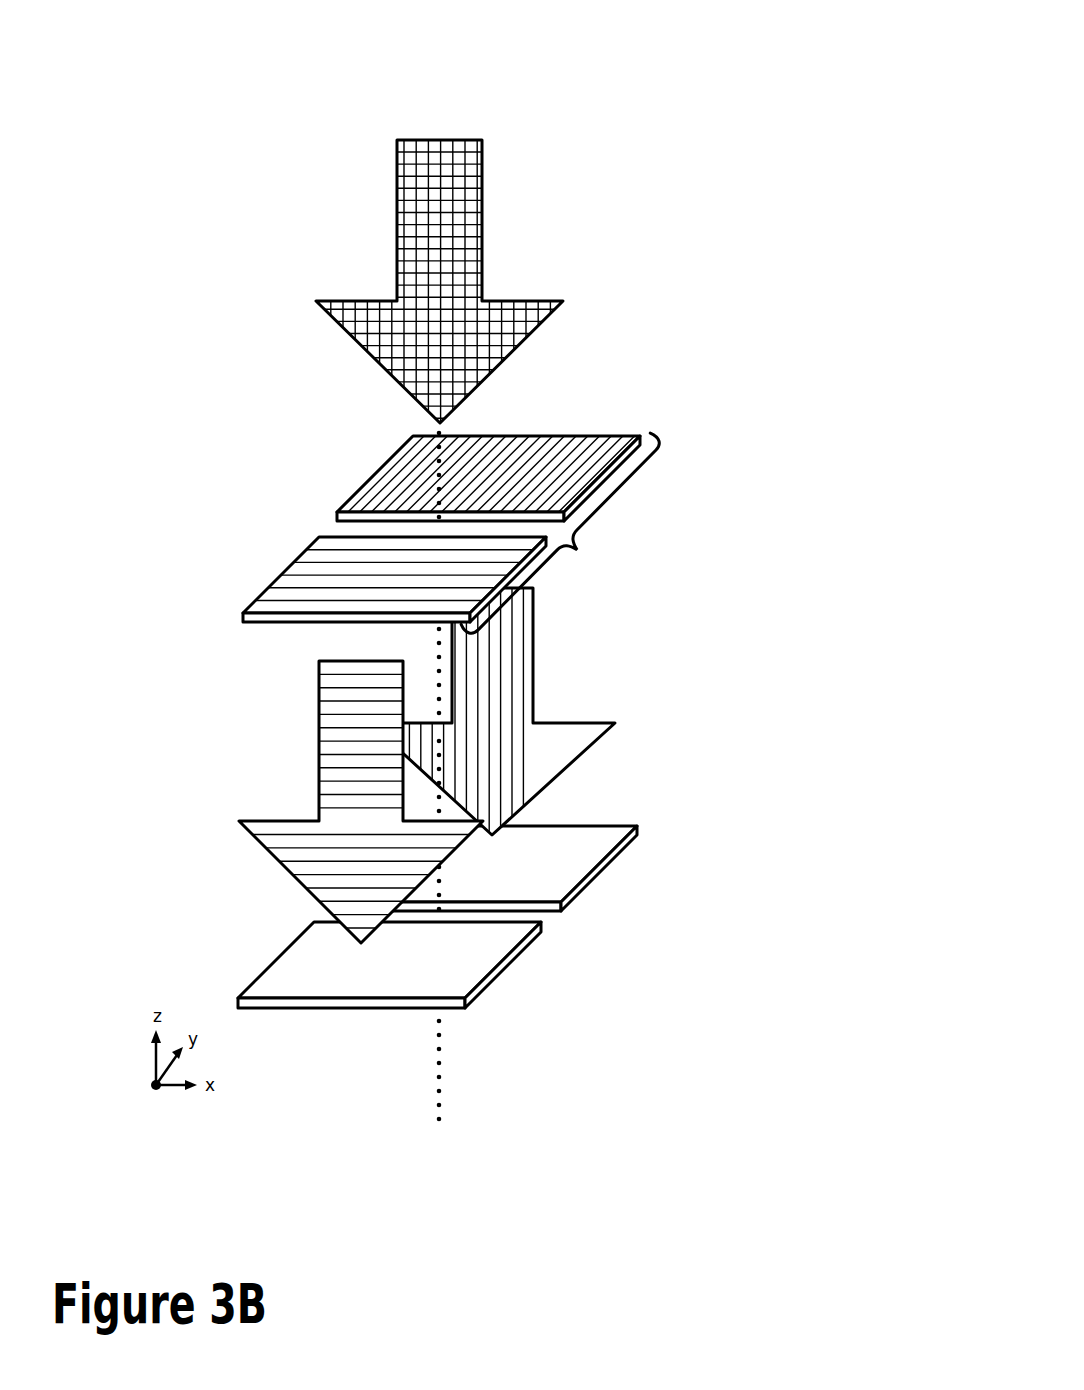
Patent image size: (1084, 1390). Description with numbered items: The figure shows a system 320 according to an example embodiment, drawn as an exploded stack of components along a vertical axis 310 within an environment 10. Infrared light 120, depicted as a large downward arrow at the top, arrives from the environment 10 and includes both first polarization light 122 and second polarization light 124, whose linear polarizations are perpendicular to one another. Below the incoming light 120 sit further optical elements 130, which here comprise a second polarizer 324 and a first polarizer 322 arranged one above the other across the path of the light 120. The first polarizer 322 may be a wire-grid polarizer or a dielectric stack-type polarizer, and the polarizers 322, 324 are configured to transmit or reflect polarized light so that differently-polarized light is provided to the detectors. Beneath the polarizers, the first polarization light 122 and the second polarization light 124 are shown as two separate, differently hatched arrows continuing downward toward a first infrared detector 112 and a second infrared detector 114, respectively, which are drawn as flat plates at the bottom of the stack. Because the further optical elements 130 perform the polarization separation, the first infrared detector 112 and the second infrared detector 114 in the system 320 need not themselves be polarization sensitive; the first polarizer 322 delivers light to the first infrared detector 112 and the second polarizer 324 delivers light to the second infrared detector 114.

The environment 10 is at (553, 123).
The first infrared detector 112 is at (342, 957).
The second infrared detector 114 is at (545, 865).
The infrared light 120 is at (423, 281).
The first polarization light 122 is at (344, 802).
The second polarization light 124 is at (495, 711).
The further optical elements 130 is at (566, 539).
The optical axis 310 is at (501, 776).
The system 320 is at (890, 78).
The first polarizer 322 is at (354, 564).
The second polarizer 324 is at (444, 467).